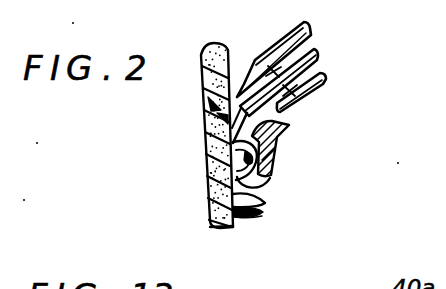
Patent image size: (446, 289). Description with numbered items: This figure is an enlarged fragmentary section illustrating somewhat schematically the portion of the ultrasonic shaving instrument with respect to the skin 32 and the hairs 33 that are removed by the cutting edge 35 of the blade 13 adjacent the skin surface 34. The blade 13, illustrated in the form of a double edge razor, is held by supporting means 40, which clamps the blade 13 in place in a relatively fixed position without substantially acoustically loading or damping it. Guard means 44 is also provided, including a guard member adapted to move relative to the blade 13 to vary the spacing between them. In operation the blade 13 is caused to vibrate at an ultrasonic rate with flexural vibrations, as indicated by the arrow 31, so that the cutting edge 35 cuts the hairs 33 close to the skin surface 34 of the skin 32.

The blade 13 is at (315, 53).
The supporting means 40 is at (323, 77).
The guard means 44 is at (290, 127).
The arrow 31 is at (210, 110).
The cutting edge 35 is at (238, 118).
The hairs 33 is at (263, 207).
The skin surface 34 is at (244, 221).
The skin 32 is at (233, 227).